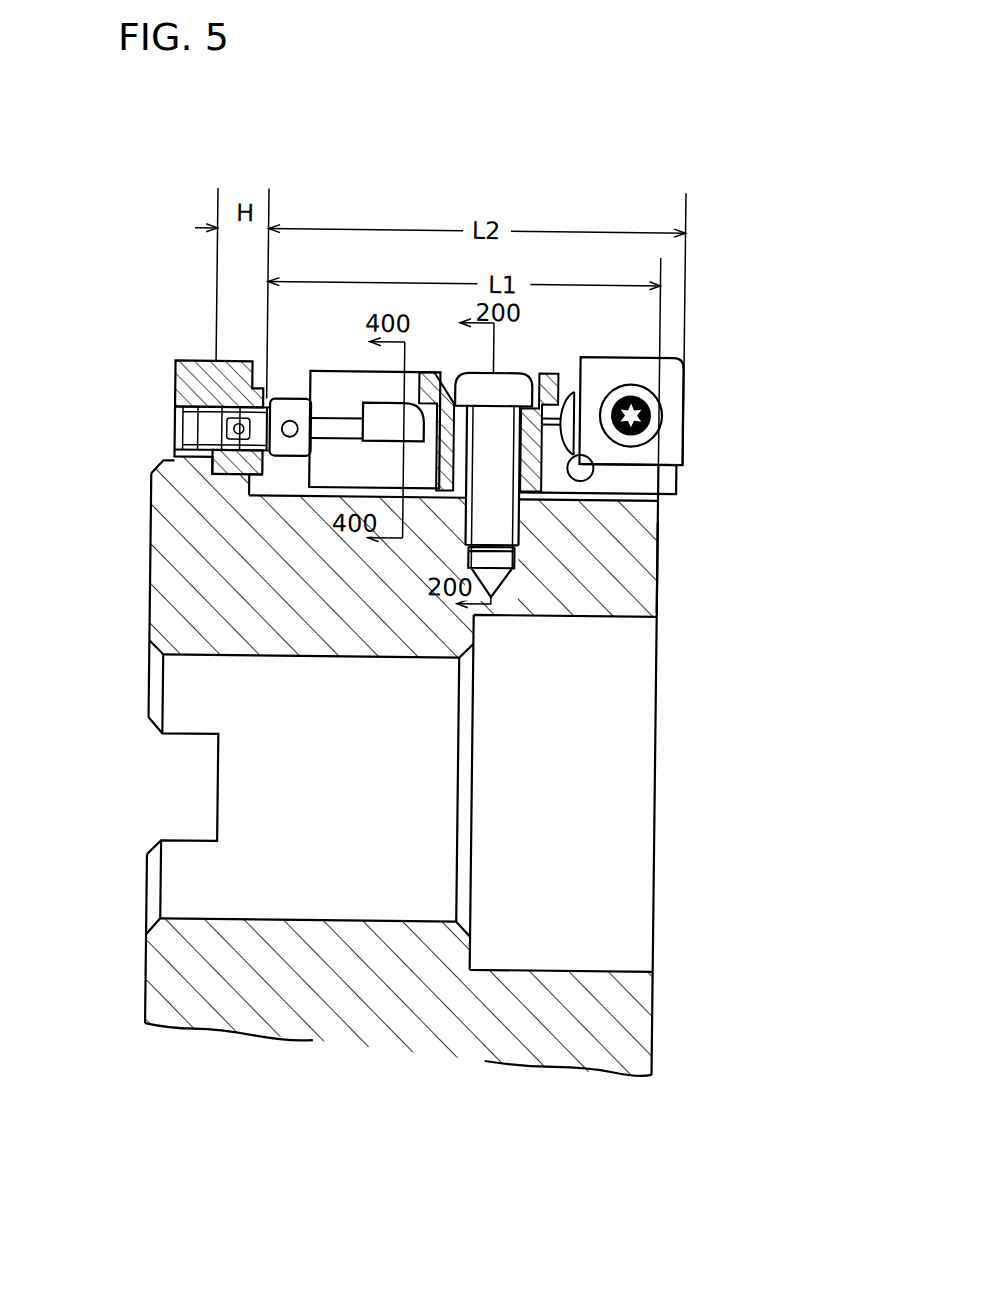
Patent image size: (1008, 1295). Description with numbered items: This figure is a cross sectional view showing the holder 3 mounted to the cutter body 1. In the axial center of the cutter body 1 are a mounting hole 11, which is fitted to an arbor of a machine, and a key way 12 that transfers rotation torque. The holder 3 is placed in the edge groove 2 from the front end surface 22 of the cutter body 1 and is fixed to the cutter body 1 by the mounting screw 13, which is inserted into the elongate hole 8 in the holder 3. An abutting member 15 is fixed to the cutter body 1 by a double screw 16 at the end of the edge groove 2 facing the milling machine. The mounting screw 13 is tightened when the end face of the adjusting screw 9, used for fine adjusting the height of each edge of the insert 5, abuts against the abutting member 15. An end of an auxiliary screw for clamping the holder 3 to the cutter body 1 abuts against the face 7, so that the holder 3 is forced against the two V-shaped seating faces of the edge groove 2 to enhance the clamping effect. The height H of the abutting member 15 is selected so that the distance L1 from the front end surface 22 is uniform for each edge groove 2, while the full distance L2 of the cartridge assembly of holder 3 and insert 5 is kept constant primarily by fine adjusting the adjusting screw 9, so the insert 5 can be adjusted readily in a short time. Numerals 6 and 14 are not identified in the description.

The cutter body 1 is at (599, 1016).
The edge groove 2 is at (261, 497).
The holder 3 is at (320, 481).
The insert 5 is at (671, 389).
The screw 6 is at (650, 421).
The face 7 is at (372, 409).
The elongate hole 8 is at (478, 425).
The adjusting screw 9 is at (283, 407).
The mounting hole 11 is at (347, 920).
The key way 12 is at (221, 800).
The mounting screw 13 is at (502, 395).
The adjusting screw 14 is at (227, 478).
The abutting member 15 is at (213, 400).
The double screw 16 is at (188, 430).
The front end surface 22 is at (666, 566).